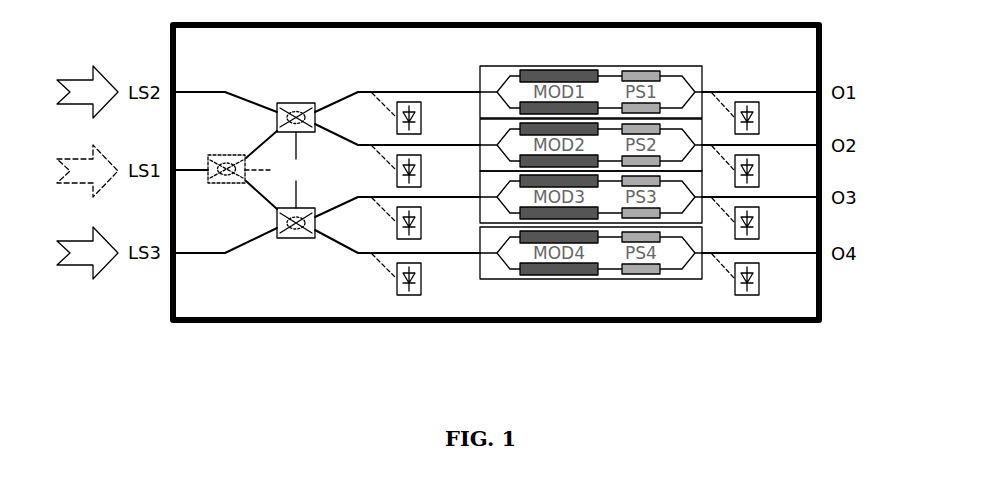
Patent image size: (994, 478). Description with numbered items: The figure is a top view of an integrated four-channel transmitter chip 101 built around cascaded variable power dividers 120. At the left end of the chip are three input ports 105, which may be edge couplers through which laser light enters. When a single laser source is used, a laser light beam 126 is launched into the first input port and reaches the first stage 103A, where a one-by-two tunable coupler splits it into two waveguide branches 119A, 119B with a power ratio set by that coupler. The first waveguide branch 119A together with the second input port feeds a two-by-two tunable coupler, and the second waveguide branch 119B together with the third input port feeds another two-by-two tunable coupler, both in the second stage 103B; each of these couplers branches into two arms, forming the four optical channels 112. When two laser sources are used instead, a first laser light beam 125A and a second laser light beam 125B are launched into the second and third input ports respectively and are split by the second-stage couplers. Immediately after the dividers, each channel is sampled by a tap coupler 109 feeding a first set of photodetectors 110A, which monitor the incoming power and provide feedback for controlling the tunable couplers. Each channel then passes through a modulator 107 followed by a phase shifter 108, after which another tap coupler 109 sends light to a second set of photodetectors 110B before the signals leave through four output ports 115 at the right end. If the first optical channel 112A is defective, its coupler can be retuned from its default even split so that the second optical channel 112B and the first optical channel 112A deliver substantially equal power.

The integrated four-channel transmitter chip 101 is at (496, 172).
The first stage of variable power dividers 103A is at (200, 258).
The second stage of variable power dividers 103B is at (270, 276).
The input ports 105 is at (143, 325).
The modulator 107 is at (528, 282).
The phase shifter 108 is at (620, 282).
The tap coupler 109 is at (373, 95).
The first set of photodetectors 110A is at (412, 323).
The second set of photodetectors 110B is at (748, 323).
The optical channels 112 is at (436, 66).
The first optical channel 112A is at (377, 89).
The second optical channel 112B is at (376, 147).
The output ports 115 is at (828, 290).
The first waveguide branch 119A is at (263, 131).
The second waveguide branch 119B is at (267, 205).
The cascaded variable power dividers 120 is at (280, 170).
The first laser light beam 125A is at (78, 85).
The second laser light beam 125B is at (82, 263).
The laser light beam 126 is at (75, 180).